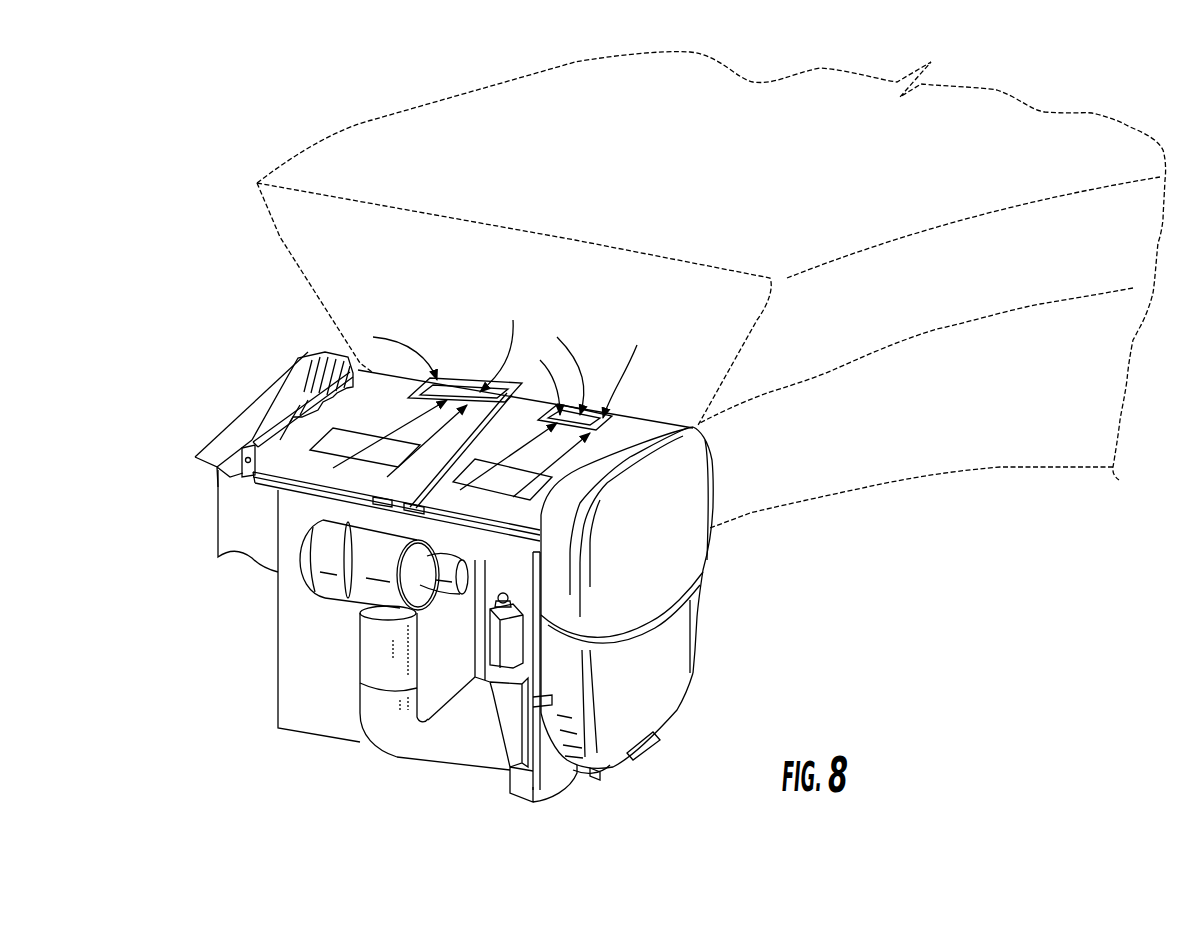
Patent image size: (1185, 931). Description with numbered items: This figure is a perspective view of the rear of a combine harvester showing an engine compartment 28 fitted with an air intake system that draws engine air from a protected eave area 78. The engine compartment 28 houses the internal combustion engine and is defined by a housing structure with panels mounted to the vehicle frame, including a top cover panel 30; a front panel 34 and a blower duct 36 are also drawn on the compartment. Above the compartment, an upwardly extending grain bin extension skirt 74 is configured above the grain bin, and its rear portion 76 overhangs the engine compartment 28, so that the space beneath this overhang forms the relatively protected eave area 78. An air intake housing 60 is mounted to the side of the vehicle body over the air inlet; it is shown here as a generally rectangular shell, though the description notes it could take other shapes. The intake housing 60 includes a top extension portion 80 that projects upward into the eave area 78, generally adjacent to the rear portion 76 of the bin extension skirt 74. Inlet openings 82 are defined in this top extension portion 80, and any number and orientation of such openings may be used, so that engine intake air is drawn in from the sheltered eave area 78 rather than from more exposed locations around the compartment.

The engine compartment 28 is at (213, 405).
The top cover panel 30 is at (297, 413).
The front panel 34 is at (290, 677).
The blower duct 36 is at (384, 638).
The intake housing 60 is at (683, 517).
The grain bin extension skirt 74 is at (372, 120).
The rear portion 76 is at (309, 269).
The eave area 78 is at (373, 243).
The top extension portion 80 is at (532, 396).
The inlet openings 82 is at (458, 383).